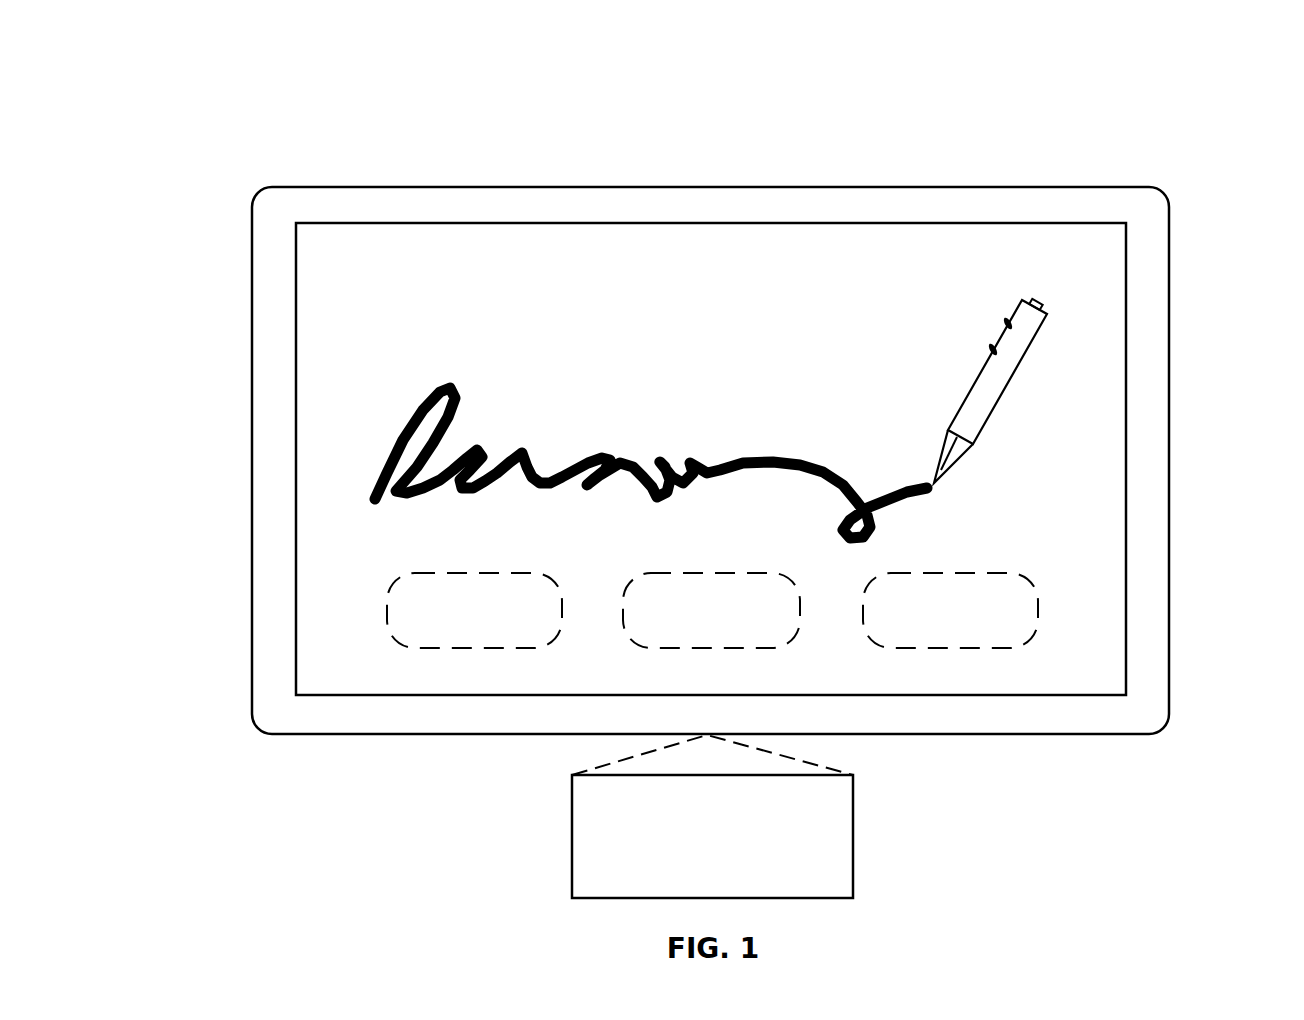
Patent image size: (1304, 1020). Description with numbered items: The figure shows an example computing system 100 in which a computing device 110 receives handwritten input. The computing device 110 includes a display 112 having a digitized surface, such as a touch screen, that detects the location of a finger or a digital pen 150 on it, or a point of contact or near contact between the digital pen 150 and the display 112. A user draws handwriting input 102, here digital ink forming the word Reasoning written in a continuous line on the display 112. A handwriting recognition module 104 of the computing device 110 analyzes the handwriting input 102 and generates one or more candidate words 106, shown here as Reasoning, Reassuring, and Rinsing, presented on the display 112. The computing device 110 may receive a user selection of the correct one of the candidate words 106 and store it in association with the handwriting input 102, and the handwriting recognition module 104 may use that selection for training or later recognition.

The computing system 100 is at (88, 91).
The handwriting input 102 is at (388, 423).
The handwriting recognition module 104 is at (697, 877).
The candidate words 106 is at (360, 570).
The computing device 110 is at (458, 187).
The display 112 is at (598, 222).
The digital pen 150 is at (1007, 360).